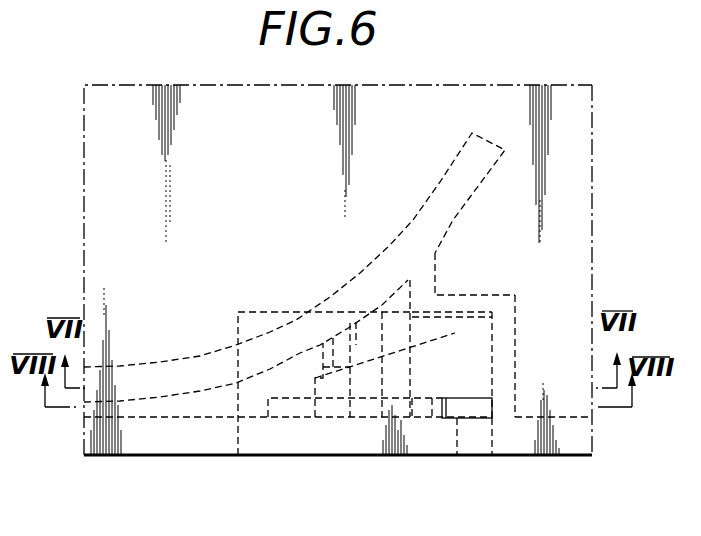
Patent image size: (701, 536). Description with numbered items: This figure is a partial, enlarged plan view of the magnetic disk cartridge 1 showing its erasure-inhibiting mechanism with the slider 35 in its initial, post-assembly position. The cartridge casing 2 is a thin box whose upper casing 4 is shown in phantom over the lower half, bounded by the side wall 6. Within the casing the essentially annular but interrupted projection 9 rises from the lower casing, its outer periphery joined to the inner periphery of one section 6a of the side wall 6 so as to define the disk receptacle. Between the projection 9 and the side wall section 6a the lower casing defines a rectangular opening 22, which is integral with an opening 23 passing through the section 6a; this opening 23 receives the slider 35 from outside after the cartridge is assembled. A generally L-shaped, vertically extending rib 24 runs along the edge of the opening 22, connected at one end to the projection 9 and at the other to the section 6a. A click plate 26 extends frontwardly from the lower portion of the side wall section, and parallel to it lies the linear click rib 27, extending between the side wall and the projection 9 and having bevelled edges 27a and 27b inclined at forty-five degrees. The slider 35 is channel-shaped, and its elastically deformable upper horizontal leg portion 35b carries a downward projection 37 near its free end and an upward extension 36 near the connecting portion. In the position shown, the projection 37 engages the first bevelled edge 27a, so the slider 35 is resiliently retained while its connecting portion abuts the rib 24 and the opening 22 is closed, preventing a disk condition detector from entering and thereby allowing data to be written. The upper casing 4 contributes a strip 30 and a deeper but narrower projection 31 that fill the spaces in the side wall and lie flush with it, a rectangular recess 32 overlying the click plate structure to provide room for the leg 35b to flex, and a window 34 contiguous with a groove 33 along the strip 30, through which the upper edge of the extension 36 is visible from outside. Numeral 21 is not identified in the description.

The magnetic disk cartridge 1 is at (599, 78).
The cartridge casing 2 is at (522, 103).
The upper casing 4 is at (572, 181).
The side wall 6 is at (549, 445).
The side wall section 6a is at (560, 442).
The annular projection 9 is at (431, 215).
The frame member 21 is at (512, 279).
The rectangular opening 22 is at (483, 335).
The opening 23 is at (483, 437).
The rib 24 is at (503, 372).
The click plate 26 is at (400, 372).
The click rib 27 is at (343, 340).
The first bevelled edge 27a is at (353, 343).
The second bevelled edge 27b is at (327, 357).
The strip 30 is at (318, 456).
The projection 31 is at (469, 422).
The rectangular recess 32 is at (262, 320).
The groove 33 is at (294, 414).
The window 34 is at (450, 408).
The slider 35 is at (462, 327).
The upper horizontal leg portion 35b is at (425, 392).
The extension 36 is at (468, 407).
The projection 37 is at (367, 382).